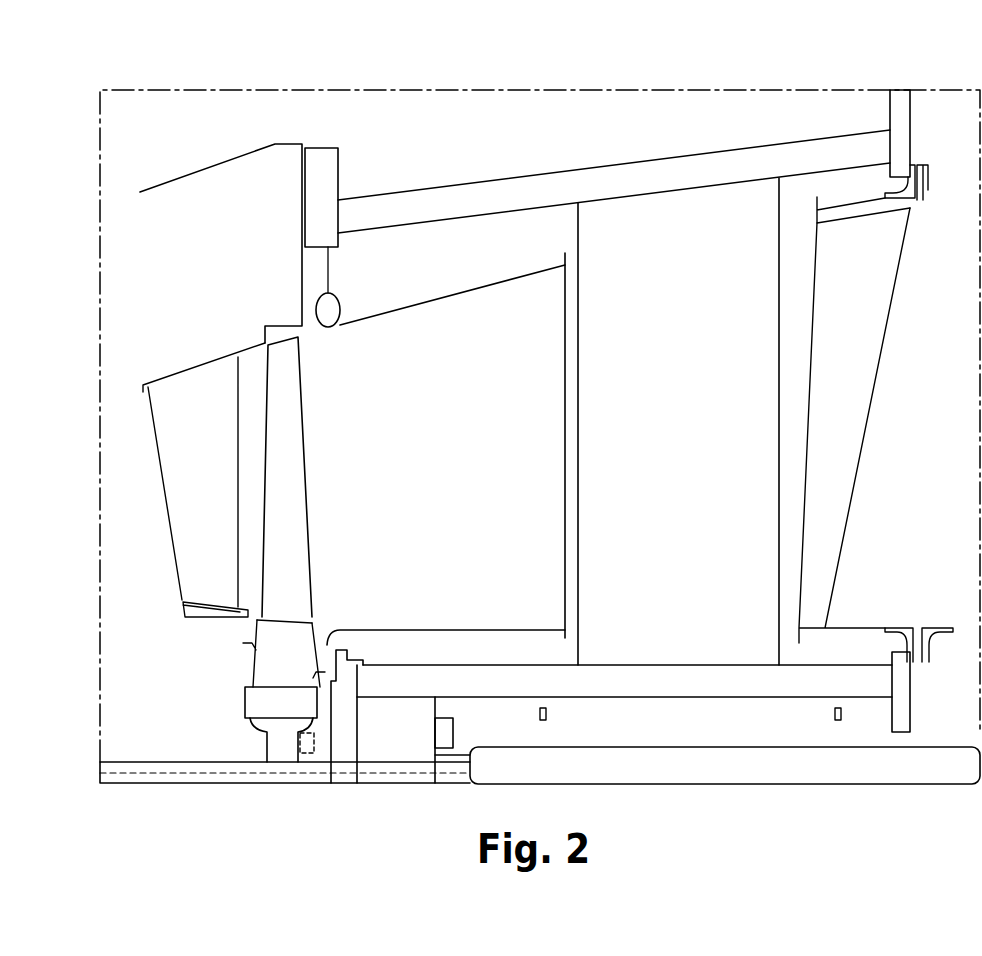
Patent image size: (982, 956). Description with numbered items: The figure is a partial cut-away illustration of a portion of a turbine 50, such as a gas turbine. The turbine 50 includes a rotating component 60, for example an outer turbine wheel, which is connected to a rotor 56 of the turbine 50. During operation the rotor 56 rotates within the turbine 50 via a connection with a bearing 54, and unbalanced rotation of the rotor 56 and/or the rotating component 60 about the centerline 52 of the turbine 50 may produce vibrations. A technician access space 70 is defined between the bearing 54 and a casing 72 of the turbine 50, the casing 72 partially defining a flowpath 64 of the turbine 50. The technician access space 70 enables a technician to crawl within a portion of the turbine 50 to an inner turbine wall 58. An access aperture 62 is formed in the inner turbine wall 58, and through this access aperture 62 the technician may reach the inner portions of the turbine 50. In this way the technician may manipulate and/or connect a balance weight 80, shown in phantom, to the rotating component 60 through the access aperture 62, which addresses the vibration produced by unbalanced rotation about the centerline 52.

The turbine 50 is at (150, 72).
The centerline 52 is at (145, 774).
The bearing 54 is at (688, 785).
The rotor 56 is at (182, 784).
The inner turbine wall 58 is at (433, 708).
The rotating component 60 is at (265, 745).
The access aperture 62 is at (445, 750).
The flowpath 64 is at (908, 437).
The technician access space 70 is at (734, 738).
The casing 72 is at (680, 692).
The balance weight 80 is at (300, 752).